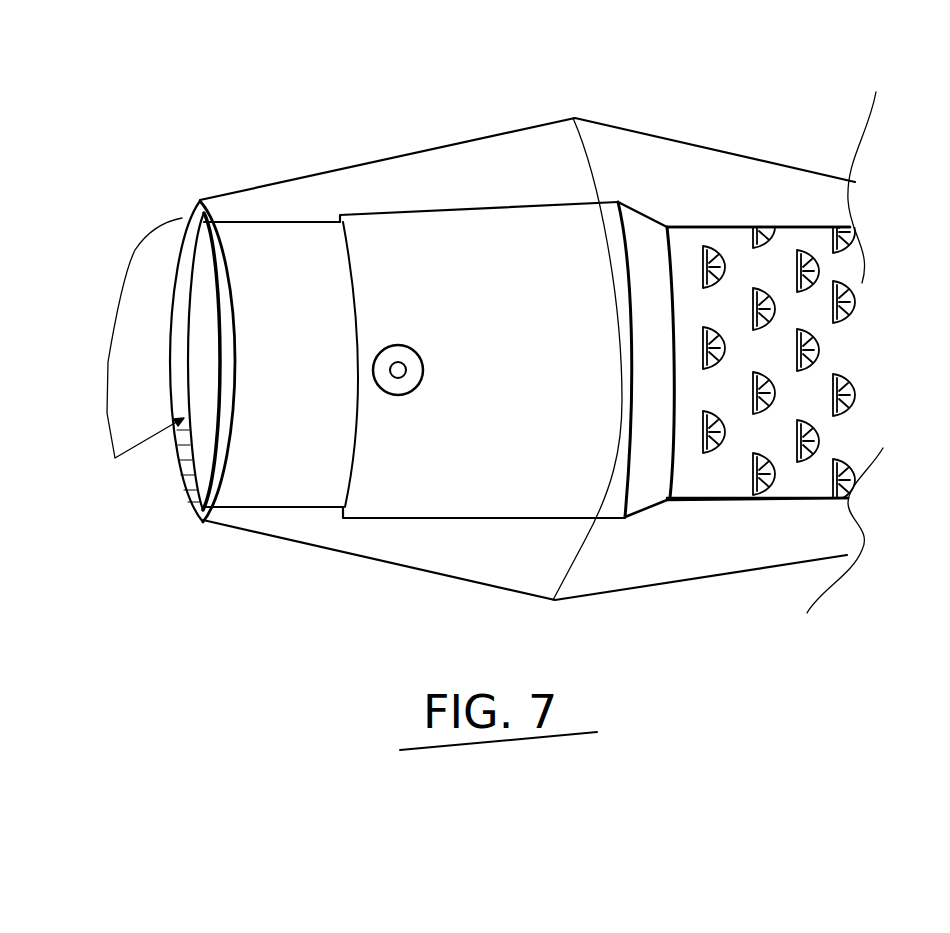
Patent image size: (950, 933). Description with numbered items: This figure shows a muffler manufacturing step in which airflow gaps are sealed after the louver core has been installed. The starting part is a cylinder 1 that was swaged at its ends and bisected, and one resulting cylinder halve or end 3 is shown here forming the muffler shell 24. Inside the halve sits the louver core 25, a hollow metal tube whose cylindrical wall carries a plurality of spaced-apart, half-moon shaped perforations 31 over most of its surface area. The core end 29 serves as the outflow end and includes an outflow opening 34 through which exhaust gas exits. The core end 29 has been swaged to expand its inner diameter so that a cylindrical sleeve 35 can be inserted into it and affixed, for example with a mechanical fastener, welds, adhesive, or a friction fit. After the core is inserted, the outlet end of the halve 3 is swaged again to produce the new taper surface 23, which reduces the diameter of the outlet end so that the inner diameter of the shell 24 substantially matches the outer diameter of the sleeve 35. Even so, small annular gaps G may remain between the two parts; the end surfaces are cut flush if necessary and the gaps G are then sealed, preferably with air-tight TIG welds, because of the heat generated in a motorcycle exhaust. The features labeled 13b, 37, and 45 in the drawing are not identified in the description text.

The cylinder 1 is at (733, 150).
The cylinder end 3 is at (648, 114).
The taper surface 23 is at (303, 167).
The muffler shell 24 is at (402, 572).
The louver core 25 is at (703, 500).
The core end 29 is at (527, 455).
The perforations 31 is at (752, 408).
The outflow opening 34 is at (207, 320).
The opening 13b is at (182, 353).
The cylindrical sleeve 35 is at (313, 462).
The fastener 37 is at (395, 388).
The rim flange 45 is at (183, 473).
The annular gaps G is at (115, 458).